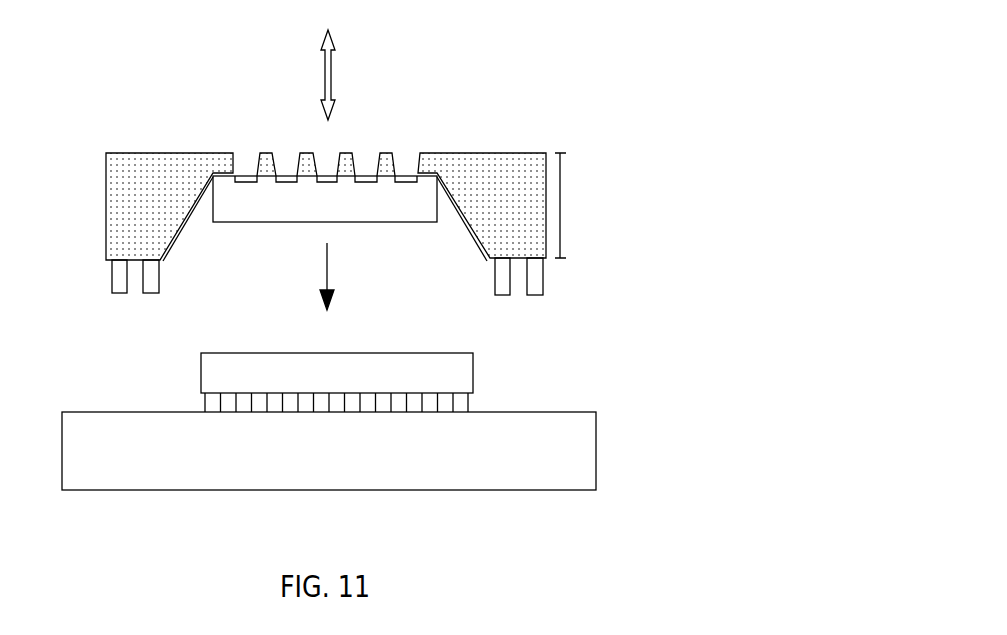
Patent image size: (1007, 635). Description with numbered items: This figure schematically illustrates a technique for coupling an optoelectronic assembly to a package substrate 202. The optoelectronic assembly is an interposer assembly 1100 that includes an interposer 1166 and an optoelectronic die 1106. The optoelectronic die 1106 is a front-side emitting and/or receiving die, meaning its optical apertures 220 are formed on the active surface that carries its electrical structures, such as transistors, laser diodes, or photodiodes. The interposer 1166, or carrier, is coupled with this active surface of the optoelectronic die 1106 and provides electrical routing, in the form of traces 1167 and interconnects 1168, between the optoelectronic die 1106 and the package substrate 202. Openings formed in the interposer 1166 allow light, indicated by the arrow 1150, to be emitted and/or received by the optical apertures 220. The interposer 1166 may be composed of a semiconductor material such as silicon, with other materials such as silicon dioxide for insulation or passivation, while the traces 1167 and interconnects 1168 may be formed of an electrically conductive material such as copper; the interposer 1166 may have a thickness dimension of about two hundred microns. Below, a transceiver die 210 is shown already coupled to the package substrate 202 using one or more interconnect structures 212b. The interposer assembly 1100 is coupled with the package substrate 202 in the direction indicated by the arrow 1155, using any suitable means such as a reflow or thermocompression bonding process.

The interposer assembly 1100 is at (522, 132).
The arrow 1150 is at (331, 78).
The arrow 1155 is at (328, 268).
The interposer 1166 is at (388, 153).
The optoelectronic die 1106 is at (357, 216).
The optical apertures 220 is at (290, 180).
The traces 1167 is at (175, 243).
The interconnects 1168 is at (148, 292).
The transceiver die 210 is at (360, 381).
The interconnect structures 212b is at (470, 412).
The package substrate 202 is at (155, 462).